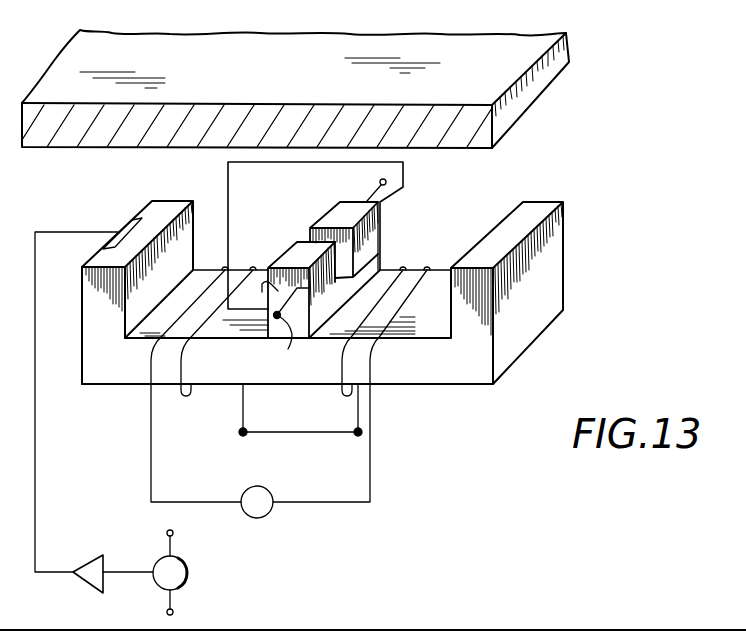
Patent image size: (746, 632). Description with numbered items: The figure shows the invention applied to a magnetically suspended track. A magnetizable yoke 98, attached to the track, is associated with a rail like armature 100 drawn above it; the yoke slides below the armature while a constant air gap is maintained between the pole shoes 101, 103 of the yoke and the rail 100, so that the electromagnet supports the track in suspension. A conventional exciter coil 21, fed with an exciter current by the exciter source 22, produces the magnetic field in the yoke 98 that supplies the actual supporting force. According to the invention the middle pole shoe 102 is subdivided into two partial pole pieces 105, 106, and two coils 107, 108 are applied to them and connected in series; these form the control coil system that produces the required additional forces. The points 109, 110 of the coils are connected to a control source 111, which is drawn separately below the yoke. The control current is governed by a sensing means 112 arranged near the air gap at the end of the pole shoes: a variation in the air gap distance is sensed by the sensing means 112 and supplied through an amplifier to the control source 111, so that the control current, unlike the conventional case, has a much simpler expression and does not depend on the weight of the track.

The rail like armature 100 is at (522, 48).
The magnetizable yoke 98 is at (557, 278).
The pole shoe 101 is at (95, 297).
The pole shoe 103 is at (544, 208).
The sensing means 112 is at (124, 222).
The pole shoe 102 is at (396, 227).
The partial pole piece 105 is at (341, 209).
The partial pole piece 106 is at (297, 253).
The coil 107 is at (344, 271).
The coil 108 is at (367, 237).
The point of the coils 110 is at (382, 180).
The point of the coils 109 is at (175, 612).
The control source 111 is at (165, 569).
The exciter coil 21 is at (372, 450).
The exciter source 22 is at (262, 508).